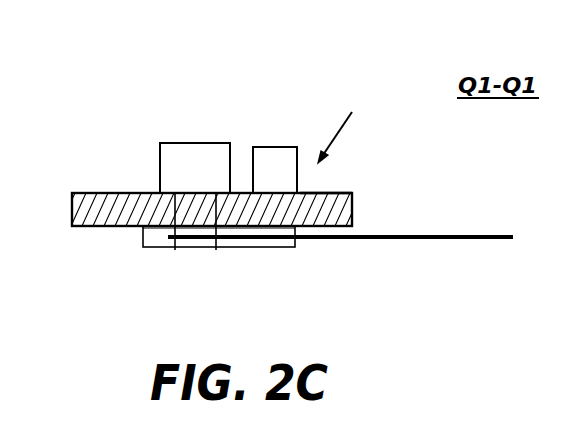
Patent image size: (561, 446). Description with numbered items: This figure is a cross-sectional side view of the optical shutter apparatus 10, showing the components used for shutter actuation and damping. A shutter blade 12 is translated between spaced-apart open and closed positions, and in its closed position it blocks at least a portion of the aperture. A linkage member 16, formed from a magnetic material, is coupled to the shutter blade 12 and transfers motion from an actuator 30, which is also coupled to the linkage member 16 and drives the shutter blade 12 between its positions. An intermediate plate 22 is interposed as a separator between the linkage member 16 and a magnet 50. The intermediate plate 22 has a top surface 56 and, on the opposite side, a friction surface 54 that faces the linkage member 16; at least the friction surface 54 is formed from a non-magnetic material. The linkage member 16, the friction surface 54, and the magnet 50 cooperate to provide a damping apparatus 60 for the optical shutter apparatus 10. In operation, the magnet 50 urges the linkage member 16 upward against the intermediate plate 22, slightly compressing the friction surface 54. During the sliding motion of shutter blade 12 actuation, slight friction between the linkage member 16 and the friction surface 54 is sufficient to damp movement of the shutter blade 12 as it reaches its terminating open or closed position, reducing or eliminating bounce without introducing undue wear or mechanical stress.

The optical shutter apparatus 10 is at (96, 65).
The shutter blade 12 is at (425, 234).
The linkage member 16 is at (258, 247).
The intermediate plate 22 is at (113, 192).
The actuator 30 is at (188, 143).
The magnet 50 is at (282, 146).
The friction surface 54 is at (268, 228).
The top surface 56 is at (334, 192).
The damping apparatus 60 is at (347, 125).